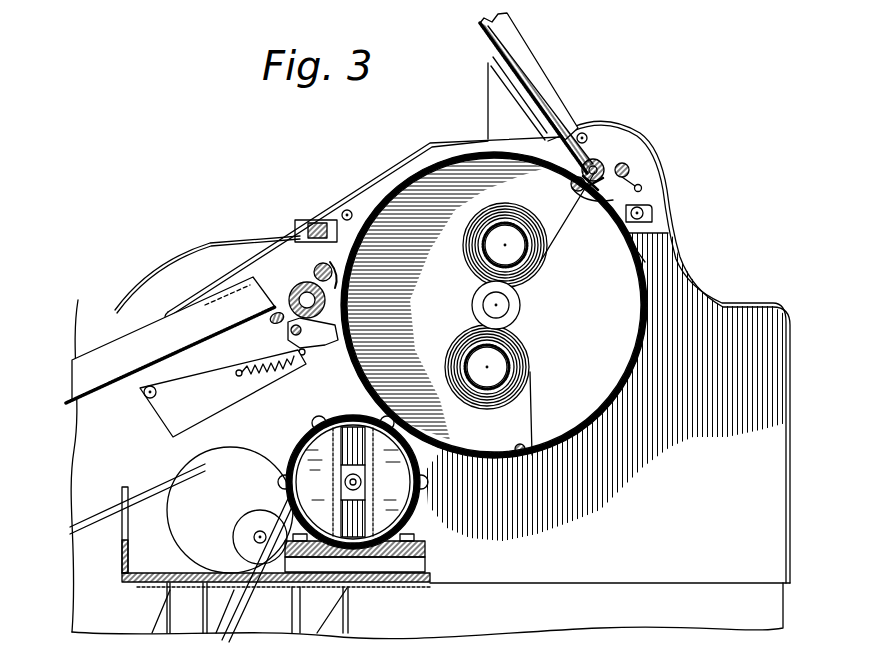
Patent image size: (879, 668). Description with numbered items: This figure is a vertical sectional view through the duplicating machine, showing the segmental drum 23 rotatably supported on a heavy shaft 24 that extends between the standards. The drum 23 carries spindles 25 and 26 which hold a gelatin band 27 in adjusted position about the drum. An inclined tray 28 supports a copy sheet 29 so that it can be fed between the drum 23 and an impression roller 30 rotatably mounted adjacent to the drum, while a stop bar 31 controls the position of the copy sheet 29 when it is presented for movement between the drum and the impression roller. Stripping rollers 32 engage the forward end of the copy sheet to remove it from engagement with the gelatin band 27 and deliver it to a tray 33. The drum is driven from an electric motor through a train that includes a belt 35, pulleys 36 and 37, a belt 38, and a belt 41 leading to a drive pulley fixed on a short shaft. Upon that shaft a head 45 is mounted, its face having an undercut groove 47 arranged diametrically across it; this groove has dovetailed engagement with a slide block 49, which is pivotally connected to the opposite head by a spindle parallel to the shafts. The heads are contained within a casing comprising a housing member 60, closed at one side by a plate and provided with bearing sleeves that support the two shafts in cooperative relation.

The segmental drum 23 is at (493, 447).
The heavy shaft 24 is at (512, 306).
The spindle 25 is at (522, 252).
The spindle 26 is at (502, 368).
The gelatin band 27 is at (534, 400).
The inclined tray 28 is at (484, 47).
The copy sheet 29 is at (533, 74).
The impression roller 30 is at (597, 162).
The stop bar 31 is at (592, 200).
The stripping rollers 32 is at (306, 283).
The tray 33 is at (112, 352).
The belt 35 is at (98, 503).
The pulley 36 is at (267, 452).
The pulley 37 is at (262, 510).
The belt 38 is at (217, 548).
The belt 41 is at (240, 607).
The head 45 is at (428, 452).
The undercut groove 47 is at (346, 430).
The slide block 49 is at (344, 483).
The housing member 60 is at (304, 440).